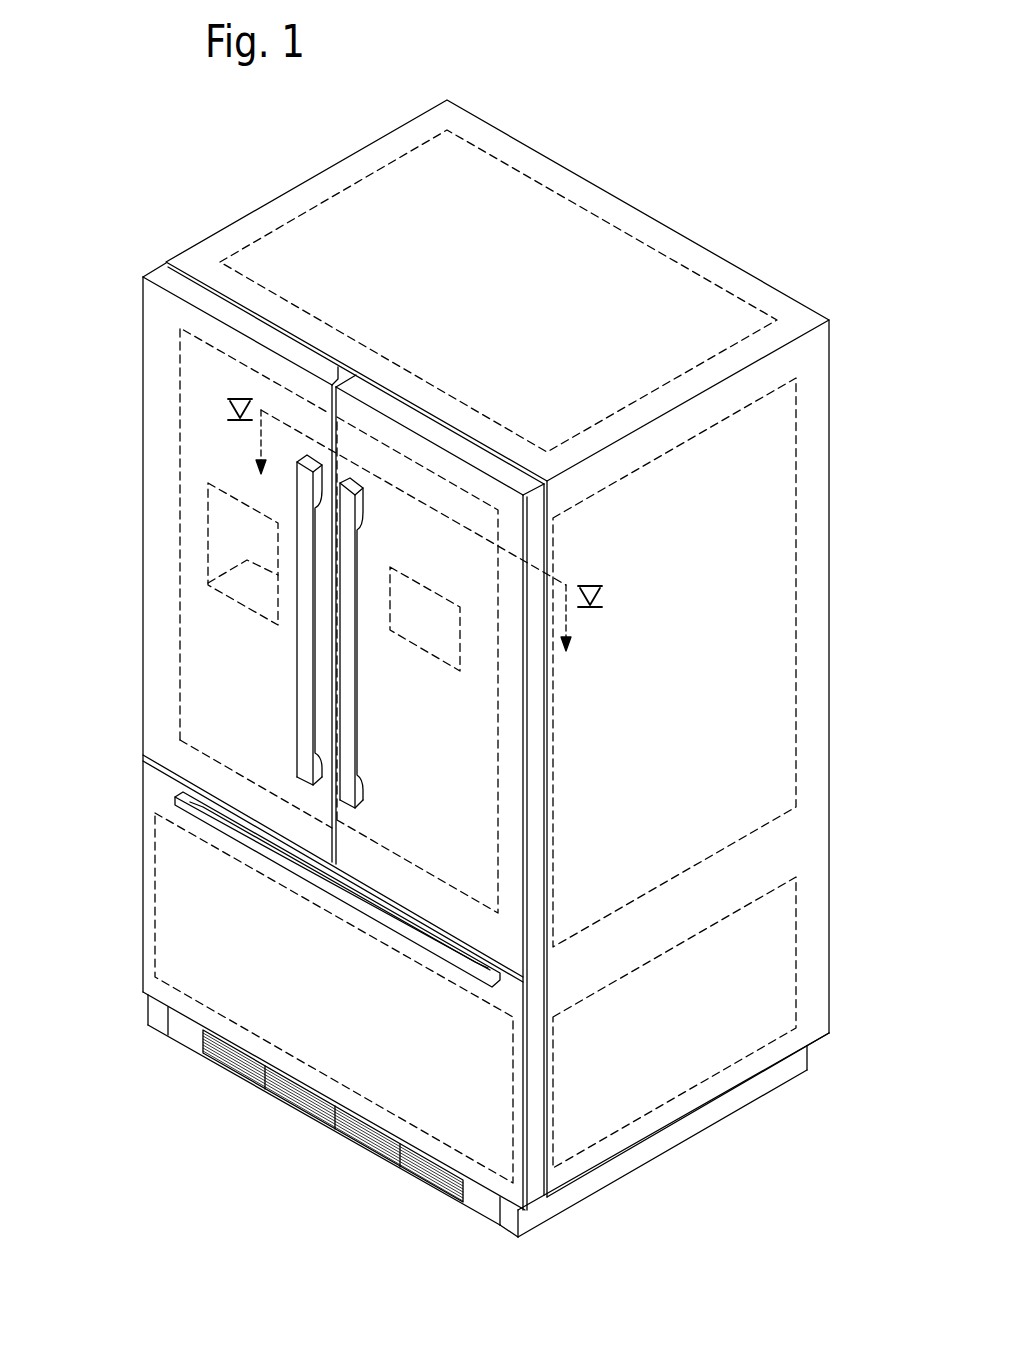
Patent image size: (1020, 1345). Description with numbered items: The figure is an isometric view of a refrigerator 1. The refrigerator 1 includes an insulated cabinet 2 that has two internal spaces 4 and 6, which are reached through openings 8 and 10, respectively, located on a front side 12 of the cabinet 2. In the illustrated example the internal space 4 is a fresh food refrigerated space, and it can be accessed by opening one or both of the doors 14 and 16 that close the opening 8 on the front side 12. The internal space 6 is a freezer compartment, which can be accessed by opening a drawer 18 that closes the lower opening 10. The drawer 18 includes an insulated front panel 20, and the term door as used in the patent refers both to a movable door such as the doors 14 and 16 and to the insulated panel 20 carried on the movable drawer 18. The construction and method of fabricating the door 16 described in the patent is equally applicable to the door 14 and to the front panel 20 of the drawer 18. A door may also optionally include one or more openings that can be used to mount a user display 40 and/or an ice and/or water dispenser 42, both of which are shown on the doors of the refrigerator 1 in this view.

The refrigerator 1 is at (640, 207).
The insulated cabinet 2 is at (806, 557).
The internal space 4 is at (778, 668).
The internal space 6 is at (633, 1103).
The opening 8 is at (203, 663).
The opening 10 is at (213, 1010).
The front side 12 is at (213, 287).
The door 14 is at (157, 557).
The door 16 is at (477, 780).
The drawer 18 is at (143, 923).
The insulated front panel 20 is at (143, 893).
The user display 40 is at (460, 650).
The ice and/or water dispenser 42 is at (208, 513).